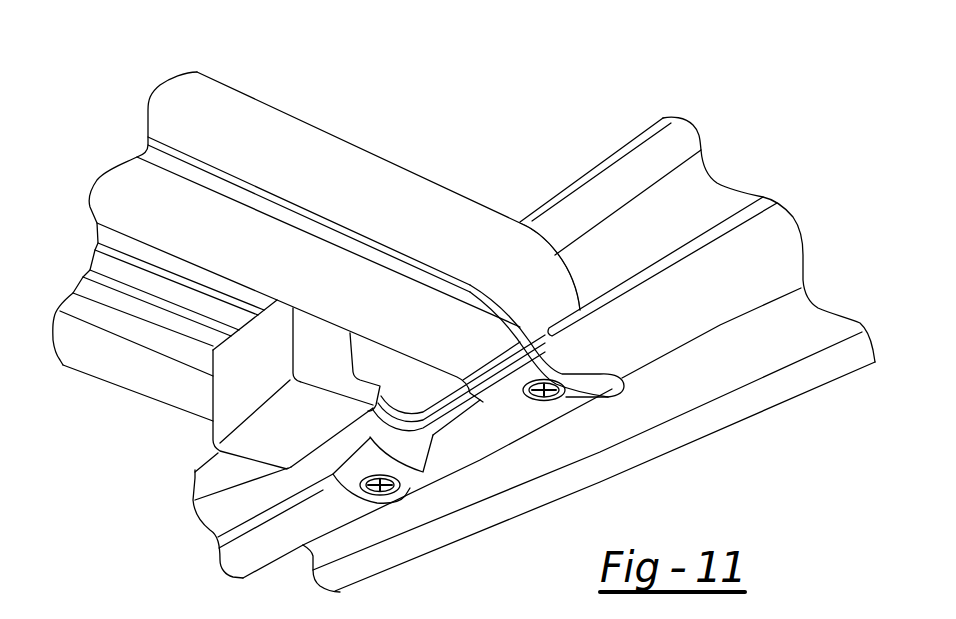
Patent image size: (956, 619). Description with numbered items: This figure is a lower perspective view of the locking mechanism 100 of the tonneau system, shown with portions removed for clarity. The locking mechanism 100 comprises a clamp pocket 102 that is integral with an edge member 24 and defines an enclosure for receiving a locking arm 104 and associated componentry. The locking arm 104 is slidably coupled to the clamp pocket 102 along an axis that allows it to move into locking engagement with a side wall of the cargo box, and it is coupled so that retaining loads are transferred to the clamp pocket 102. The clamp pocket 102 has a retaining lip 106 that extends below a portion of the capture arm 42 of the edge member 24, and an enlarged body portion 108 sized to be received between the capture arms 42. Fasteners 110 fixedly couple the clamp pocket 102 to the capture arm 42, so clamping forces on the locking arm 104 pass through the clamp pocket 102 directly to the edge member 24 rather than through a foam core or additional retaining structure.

The locking mechanism 100 is at (392, 98).
The clamp pocket 102 is at (232, 125).
The locking arm 104 is at (223, 428).
The retaining lip 106 is at (548, 403).
The enlarged body portion 108 is at (555, 277).
The fasteners 110 is at (580, 399).
The edge member 24 is at (768, 248).
The capture arm 42 is at (648, 132).